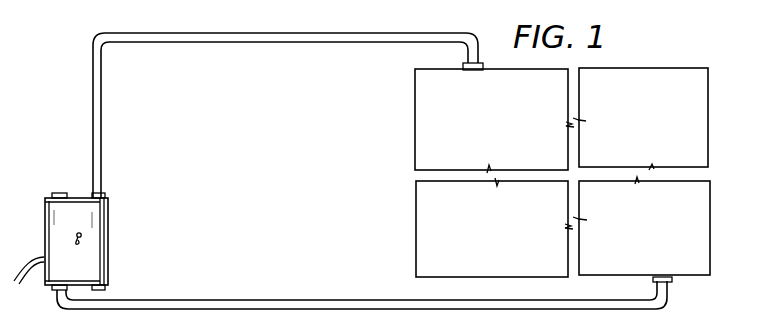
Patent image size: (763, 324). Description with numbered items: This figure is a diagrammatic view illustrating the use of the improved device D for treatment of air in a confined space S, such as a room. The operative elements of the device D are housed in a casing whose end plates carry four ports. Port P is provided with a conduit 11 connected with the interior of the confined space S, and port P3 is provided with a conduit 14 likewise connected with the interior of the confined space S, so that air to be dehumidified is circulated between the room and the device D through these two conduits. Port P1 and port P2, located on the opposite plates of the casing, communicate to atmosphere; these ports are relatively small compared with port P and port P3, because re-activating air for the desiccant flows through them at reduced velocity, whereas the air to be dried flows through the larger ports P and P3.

The conduit 11 is at (210, 41).
The conduit 14 is at (290, 303).
The device D is at (115, 244).
The port P1 is at (53, 193).
The port P is at (104, 193).
The port P2 is at (108, 289).
The port P3 is at (52, 291).
The confined space S is at (498, 131).